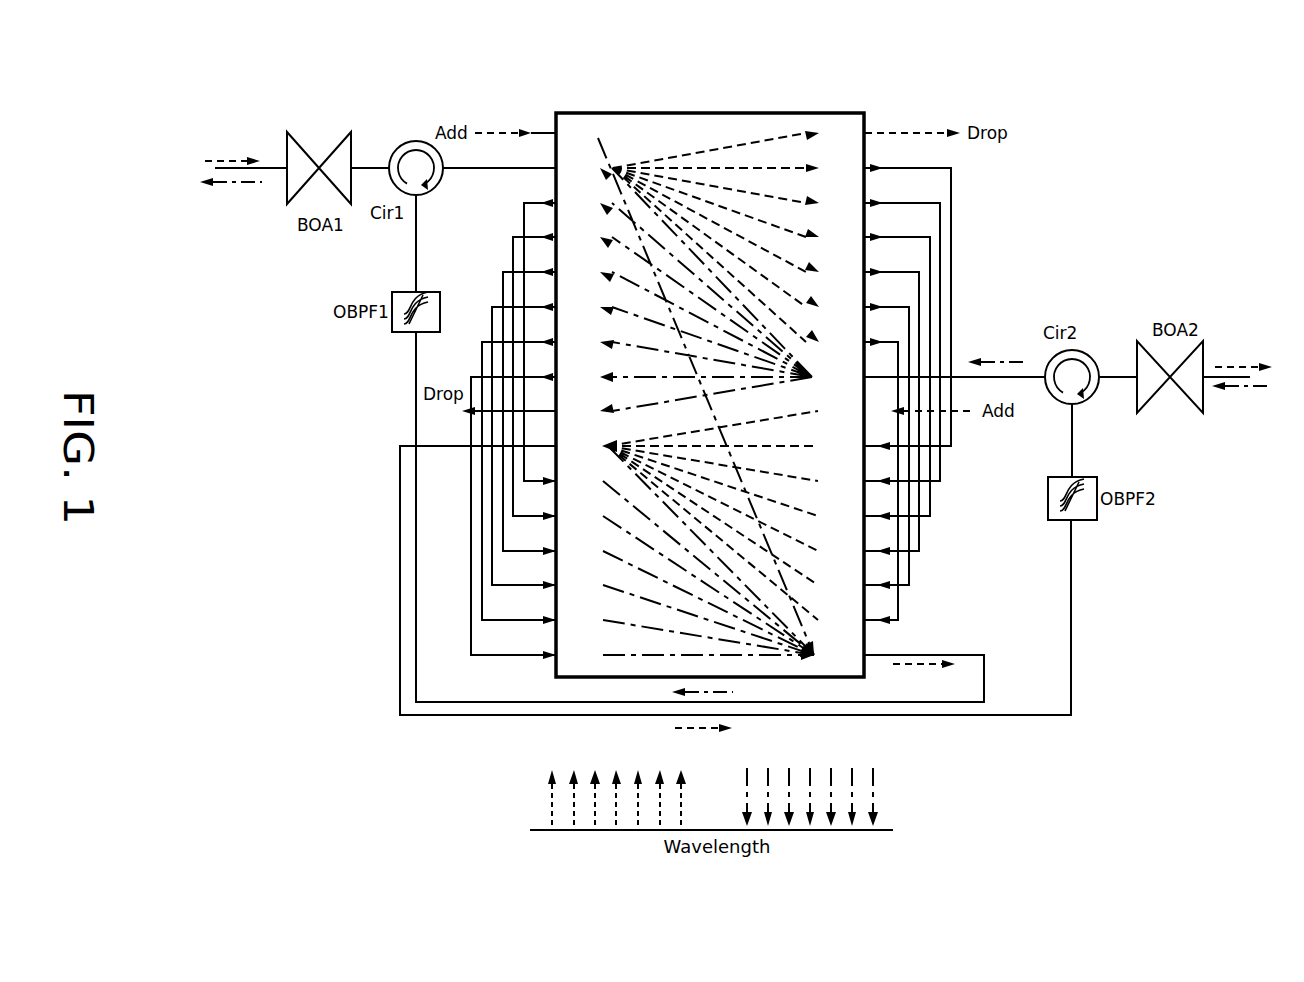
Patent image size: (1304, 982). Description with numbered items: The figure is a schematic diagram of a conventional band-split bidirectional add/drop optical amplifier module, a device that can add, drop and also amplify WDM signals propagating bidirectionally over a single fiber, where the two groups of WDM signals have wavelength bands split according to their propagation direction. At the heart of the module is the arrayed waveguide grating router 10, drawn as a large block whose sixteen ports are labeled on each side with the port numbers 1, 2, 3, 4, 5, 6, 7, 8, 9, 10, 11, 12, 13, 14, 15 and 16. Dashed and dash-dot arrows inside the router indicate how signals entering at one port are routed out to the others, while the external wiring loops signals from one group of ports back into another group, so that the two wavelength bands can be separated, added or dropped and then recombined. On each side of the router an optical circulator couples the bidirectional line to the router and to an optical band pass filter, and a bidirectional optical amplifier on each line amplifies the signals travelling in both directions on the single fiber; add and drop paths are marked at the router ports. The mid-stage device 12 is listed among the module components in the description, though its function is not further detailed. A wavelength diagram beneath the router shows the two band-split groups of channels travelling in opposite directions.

The arrayed waveguide grating router 10 is at (711, 112).
The port 1 is at (717, 133).
The port 2 is at (697, 303).
The port 3 is at (732, 338).
The port 4 is at (721, 372).
The port 5 is at (711, 407).
The port 6 is at (700, 442).
The port 7 is at (690, 477).
The port 8 is at (758, 508).
The port 9 is at (718, 411).
The port 11 is at (713, 481).
The mid-stage device 12 is at (713, 516).
The port 13 is at (713, 551).
The port 14 is at (713, 585).
The port 15 is at (713, 620).
The port 16 is at (700, 517).